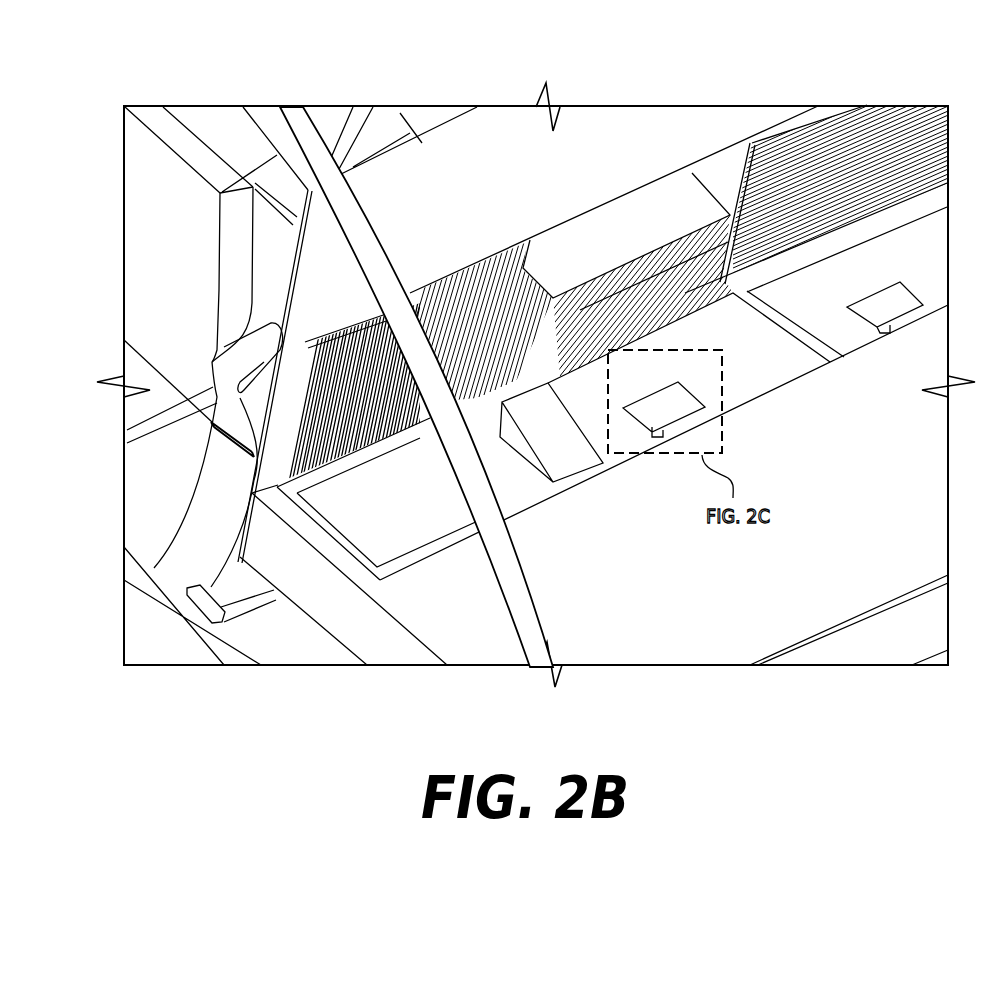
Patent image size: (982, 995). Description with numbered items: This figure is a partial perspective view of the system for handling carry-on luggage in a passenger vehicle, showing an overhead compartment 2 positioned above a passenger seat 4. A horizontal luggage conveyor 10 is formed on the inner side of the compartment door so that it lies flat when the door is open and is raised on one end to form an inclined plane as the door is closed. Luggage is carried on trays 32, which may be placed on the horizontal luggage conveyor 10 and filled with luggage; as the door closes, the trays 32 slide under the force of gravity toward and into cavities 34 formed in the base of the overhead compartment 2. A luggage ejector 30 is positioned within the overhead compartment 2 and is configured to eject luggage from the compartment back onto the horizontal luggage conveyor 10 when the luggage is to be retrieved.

The overhead compartment 2 is at (589, 617).
The passenger seat 4 is at (167, 227).
The horizontal luggage conveyor 10 is at (850, 168).
The luggage ejector 30 is at (670, 446).
The tray 32 is at (654, 250).
The cavity 34 is at (828, 323).